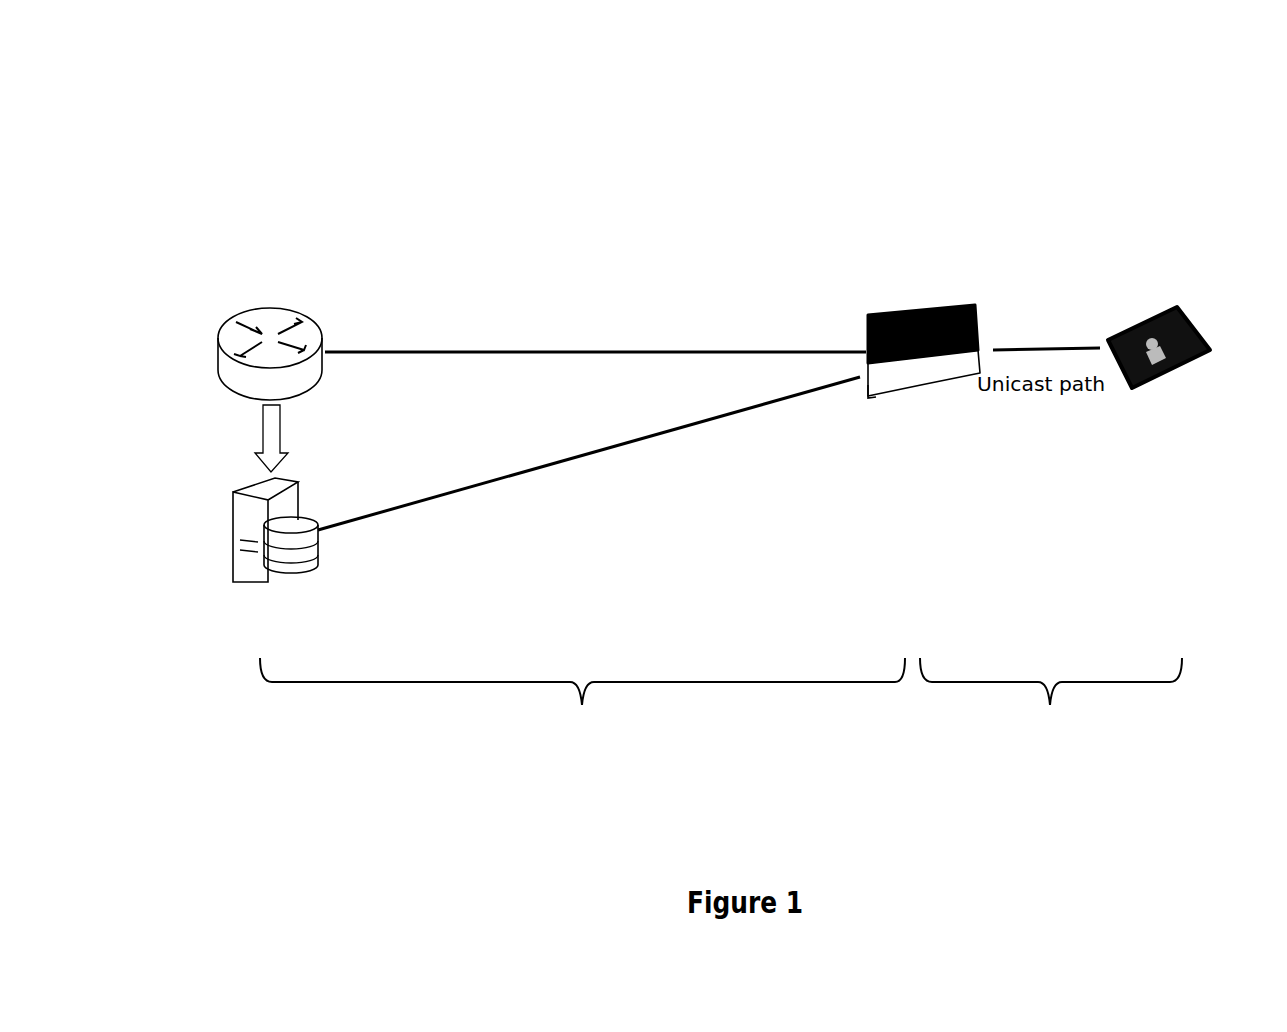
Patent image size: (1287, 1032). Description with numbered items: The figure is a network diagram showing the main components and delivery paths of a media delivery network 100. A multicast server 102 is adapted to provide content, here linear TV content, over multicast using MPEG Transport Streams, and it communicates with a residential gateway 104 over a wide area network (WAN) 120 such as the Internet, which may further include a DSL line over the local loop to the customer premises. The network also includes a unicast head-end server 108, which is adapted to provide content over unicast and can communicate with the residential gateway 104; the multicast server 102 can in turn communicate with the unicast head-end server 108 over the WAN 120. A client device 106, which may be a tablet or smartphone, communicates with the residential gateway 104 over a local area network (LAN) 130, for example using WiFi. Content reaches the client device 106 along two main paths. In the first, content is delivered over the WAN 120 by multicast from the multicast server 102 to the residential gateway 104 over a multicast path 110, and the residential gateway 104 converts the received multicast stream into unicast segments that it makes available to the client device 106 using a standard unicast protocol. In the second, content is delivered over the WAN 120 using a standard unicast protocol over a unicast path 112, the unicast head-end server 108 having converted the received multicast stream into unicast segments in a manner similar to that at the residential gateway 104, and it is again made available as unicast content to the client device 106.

The media delivery network 100 is at (631, 37).
The multicast server 102 is at (228, 322).
The residential gateway 104 is at (938, 398).
The client device 106 is at (1208, 362).
The unicast head-end server 108 is at (328, 552).
The multicast path 110 is at (543, 310).
The unicast path 112 is at (658, 450).
The wide area network (WAN) 120 is at (582, 700).
The local area network (LAN) 130 is at (1051, 703).